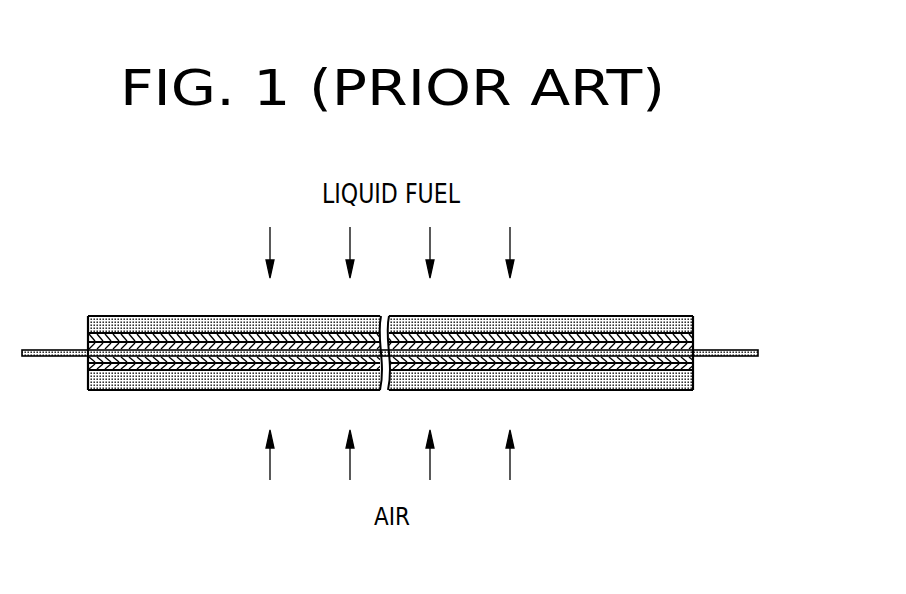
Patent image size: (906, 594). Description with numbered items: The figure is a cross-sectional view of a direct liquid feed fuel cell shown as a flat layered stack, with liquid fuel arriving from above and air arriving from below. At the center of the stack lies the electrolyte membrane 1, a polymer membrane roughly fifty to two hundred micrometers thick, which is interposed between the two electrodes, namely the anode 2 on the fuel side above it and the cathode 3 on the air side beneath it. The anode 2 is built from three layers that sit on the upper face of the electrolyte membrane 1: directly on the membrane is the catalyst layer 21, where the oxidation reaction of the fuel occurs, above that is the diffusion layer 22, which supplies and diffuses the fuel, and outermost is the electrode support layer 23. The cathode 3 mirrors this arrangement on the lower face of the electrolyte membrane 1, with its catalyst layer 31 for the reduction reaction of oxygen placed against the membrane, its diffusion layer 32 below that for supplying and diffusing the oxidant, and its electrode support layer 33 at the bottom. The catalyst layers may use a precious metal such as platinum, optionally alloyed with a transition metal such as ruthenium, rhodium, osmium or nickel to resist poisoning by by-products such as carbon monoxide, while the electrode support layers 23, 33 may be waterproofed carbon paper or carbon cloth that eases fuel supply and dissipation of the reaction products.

The electrolyte membrane 1 is at (760, 353).
The anode 2 is at (439, 315).
The catalyst layer 21 is at (693, 348).
The diffusion layer 22 is at (693, 338).
The electrode support layer 23 is at (693, 323).
The cathode 3 is at (440, 394).
The catalyst layer 31 is at (693, 360).
The diffusion layer 32 is at (693, 367).
The electrode support layer 33 is at (693, 380).